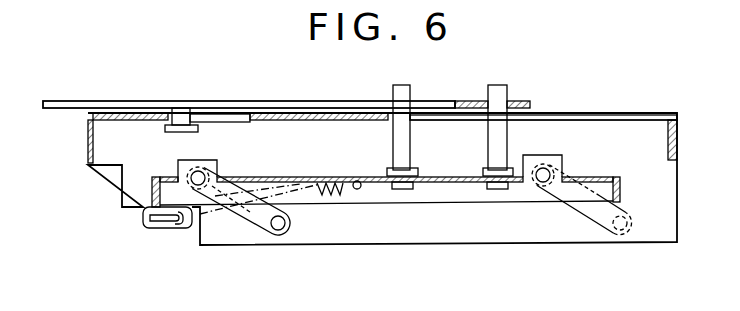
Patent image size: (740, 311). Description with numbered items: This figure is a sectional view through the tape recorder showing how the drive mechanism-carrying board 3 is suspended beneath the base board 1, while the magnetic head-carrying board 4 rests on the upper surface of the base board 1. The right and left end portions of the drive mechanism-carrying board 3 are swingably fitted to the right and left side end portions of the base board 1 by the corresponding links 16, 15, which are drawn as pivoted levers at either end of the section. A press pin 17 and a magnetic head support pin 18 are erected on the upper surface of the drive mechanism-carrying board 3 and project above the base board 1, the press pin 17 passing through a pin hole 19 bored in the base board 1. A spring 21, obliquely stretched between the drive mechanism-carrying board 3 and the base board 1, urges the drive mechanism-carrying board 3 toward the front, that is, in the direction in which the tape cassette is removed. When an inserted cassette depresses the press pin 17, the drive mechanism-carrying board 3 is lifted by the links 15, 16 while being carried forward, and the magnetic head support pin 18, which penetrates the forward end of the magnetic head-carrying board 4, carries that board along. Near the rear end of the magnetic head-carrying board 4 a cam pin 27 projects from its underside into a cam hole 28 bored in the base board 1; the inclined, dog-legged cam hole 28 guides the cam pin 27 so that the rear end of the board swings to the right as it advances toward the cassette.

The base board 1 is at (592, 112).
The drive mechanism-carrying board 3 is at (313, 180).
The magnetic head-carrying board 4 is at (278, 102).
The link 15 is at (252, 232).
The link 16 is at (580, 213).
The press pin 17 is at (398, 85).
The magnetic head support pin 18 is at (497, 85).
The pin hole 19 is at (448, 120).
The spring 21 is at (328, 197).
The cam pin 27 is at (177, 133).
The cam hole 28 is at (240, 123).